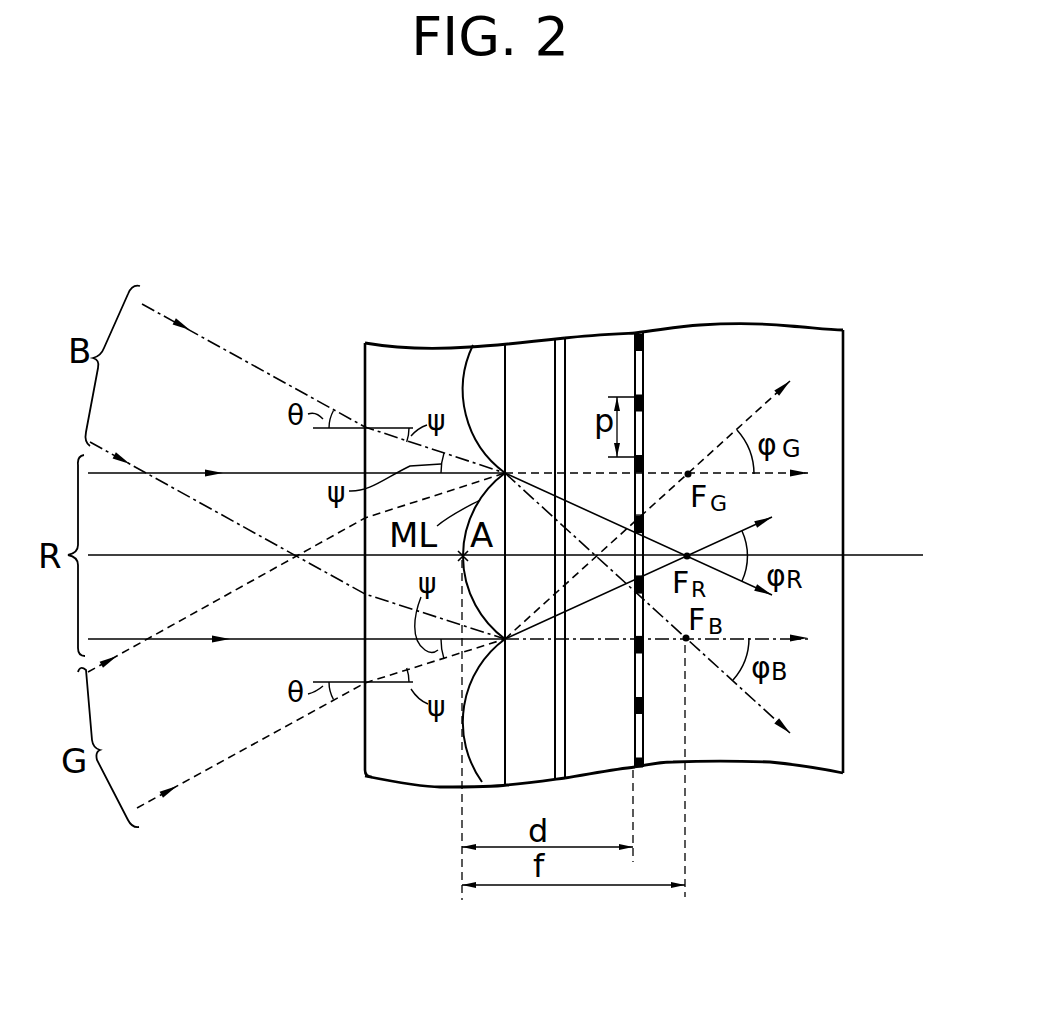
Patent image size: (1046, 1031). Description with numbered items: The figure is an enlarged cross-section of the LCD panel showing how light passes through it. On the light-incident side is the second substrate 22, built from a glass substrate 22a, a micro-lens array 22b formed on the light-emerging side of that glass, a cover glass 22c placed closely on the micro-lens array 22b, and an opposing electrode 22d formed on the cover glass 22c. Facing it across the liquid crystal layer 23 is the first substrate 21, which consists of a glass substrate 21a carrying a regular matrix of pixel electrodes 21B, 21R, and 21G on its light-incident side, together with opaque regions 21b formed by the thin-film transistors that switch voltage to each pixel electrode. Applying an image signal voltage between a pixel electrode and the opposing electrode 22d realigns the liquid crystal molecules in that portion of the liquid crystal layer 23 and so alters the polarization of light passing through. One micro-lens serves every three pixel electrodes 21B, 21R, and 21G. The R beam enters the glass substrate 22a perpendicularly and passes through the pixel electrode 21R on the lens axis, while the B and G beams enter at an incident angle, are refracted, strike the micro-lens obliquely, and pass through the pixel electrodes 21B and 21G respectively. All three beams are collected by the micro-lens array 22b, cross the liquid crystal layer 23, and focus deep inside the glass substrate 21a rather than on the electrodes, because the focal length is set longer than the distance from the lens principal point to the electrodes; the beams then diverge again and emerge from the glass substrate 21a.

The second substrate 22 is at (548, 228).
The glass substrate 22a is at (392, 352).
The micro-lens array 22b is at (478, 357).
The cover glass 22c is at (525, 360).
The opposing electrode 22d is at (562, 352).
The liquid crystal layer 23 is at (600, 345).
The first substrate 21 is at (827, 268).
The pixel electrode 21G is at (643, 490).
The glass substrate 21a is at (770, 352).
The pixel electrode 21R is at (636, 552).
The pixel electrode 21B is at (635, 618).
The opaque regions 21b is at (643, 578).